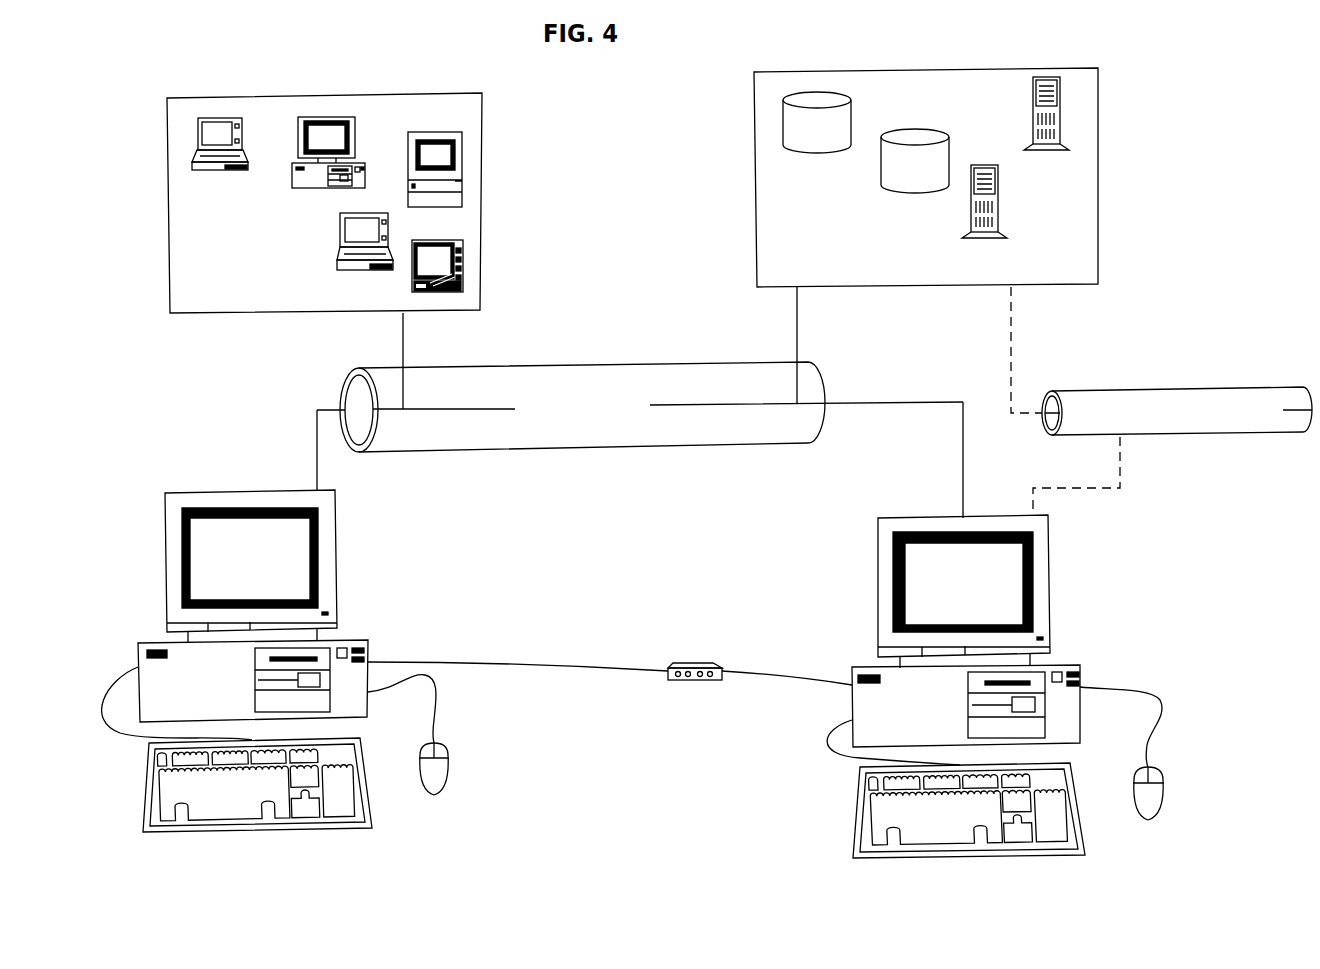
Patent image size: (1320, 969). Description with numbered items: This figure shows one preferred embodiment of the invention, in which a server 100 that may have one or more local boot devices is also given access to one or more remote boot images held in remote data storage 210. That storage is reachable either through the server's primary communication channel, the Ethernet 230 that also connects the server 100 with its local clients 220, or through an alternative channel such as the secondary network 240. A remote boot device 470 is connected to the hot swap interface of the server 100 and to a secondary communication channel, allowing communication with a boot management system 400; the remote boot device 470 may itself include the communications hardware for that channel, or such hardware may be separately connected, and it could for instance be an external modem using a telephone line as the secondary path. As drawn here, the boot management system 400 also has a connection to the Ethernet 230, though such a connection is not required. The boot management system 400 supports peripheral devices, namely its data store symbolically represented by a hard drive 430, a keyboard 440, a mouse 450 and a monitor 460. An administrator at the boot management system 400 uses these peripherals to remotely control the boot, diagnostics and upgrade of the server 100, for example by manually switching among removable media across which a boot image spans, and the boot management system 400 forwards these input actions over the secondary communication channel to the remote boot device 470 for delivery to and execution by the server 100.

The server 100 is at (1138, 616).
The remote data storage 210 is at (813, 192).
The clients 220 is at (240, 240).
The Ethernet 230 is at (483, 451).
The secondary network 240 is at (1263, 433).
The boot management system 400 is at (274, 661).
The hard drive 430 is at (255, 702).
The keyboard 440 is at (253, 832).
The mouse 450 is at (437, 799).
The monitor 460 is at (248, 492).
The remote boot device 470 is at (688, 680).